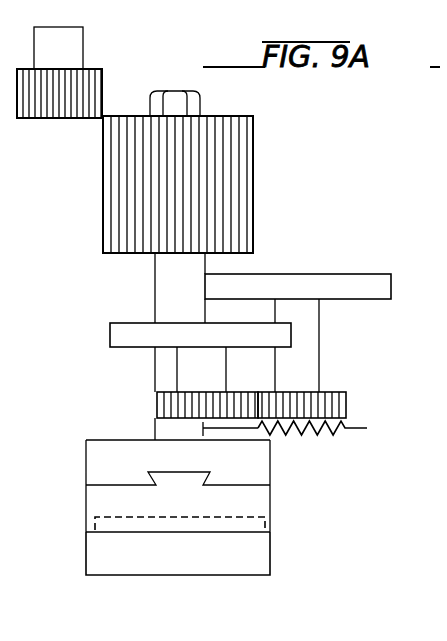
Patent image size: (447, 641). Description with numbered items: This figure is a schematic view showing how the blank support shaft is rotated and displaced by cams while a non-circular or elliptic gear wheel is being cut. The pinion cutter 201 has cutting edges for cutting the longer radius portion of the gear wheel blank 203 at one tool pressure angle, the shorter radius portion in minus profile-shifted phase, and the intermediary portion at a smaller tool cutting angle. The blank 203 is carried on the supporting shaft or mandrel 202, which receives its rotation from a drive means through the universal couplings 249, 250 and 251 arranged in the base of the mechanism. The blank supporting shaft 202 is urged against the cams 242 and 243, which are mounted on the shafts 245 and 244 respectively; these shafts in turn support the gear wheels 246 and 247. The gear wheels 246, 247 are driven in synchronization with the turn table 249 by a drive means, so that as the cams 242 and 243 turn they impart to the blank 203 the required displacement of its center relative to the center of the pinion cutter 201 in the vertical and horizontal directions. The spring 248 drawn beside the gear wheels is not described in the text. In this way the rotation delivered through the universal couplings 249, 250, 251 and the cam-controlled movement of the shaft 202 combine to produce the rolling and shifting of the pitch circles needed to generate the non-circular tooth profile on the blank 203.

The pinion cutter 201 is at (104, 85).
The blank supporting shaft 202 is at (155, 276).
The gear wheel blank 203 is at (103, 149).
The cam 242 is at (340, 274).
The cam 243 is at (110, 331).
The shaft 244 is at (177, 371).
The shaft 245 is at (320, 317).
The gear wheel 246 is at (346, 396).
The gear wheel 247 is at (157, 397).
The spring 248 is at (310, 437).
The universal coupling 249 is at (272, 555).
The universal coupling 250 is at (272, 505).
The universal coupling 251 is at (272, 467).